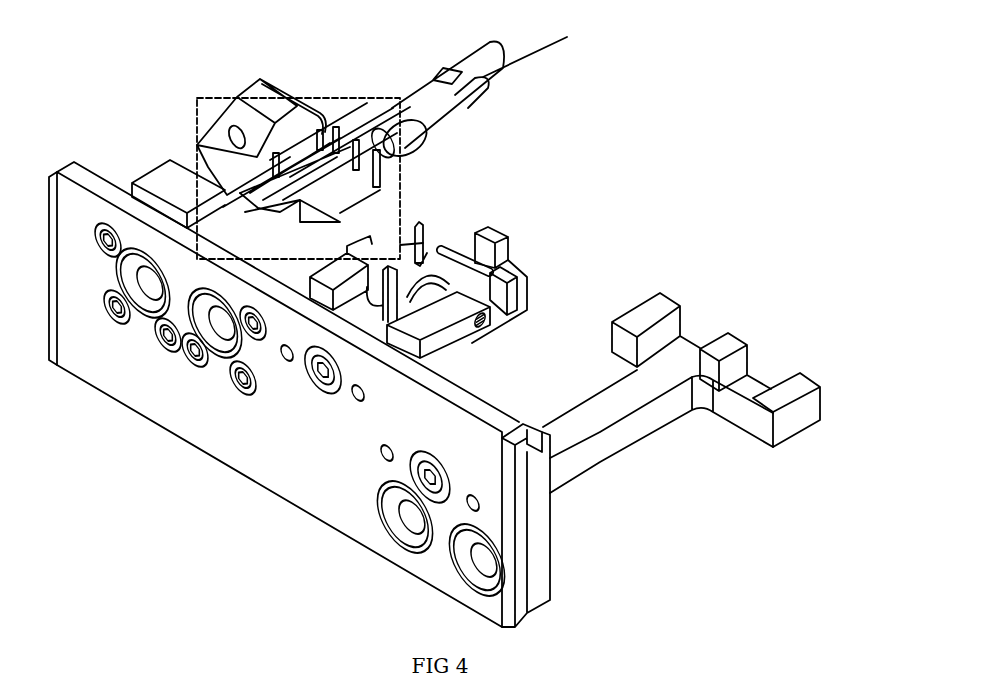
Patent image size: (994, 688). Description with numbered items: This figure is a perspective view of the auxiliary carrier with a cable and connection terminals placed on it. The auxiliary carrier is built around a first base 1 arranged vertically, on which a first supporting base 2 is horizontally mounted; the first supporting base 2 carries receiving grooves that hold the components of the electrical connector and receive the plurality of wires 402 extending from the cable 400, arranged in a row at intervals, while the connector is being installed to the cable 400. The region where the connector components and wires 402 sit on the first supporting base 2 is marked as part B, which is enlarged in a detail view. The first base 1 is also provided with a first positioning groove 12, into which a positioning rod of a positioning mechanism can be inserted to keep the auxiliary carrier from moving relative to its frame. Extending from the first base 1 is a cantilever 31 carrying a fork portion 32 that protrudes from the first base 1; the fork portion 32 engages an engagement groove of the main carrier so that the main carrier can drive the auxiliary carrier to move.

The first base 1 is at (121, 352).
The first supporting base 2 is at (190, 177).
The first positioning groove 12 is at (335, 372).
The cantilever 31 is at (612, 417).
The fork portion 32 is at (758, 374).
The cable 400 is at (512, 53).
The wires 402 is at (450, 110).
The part B is at (340, 97).